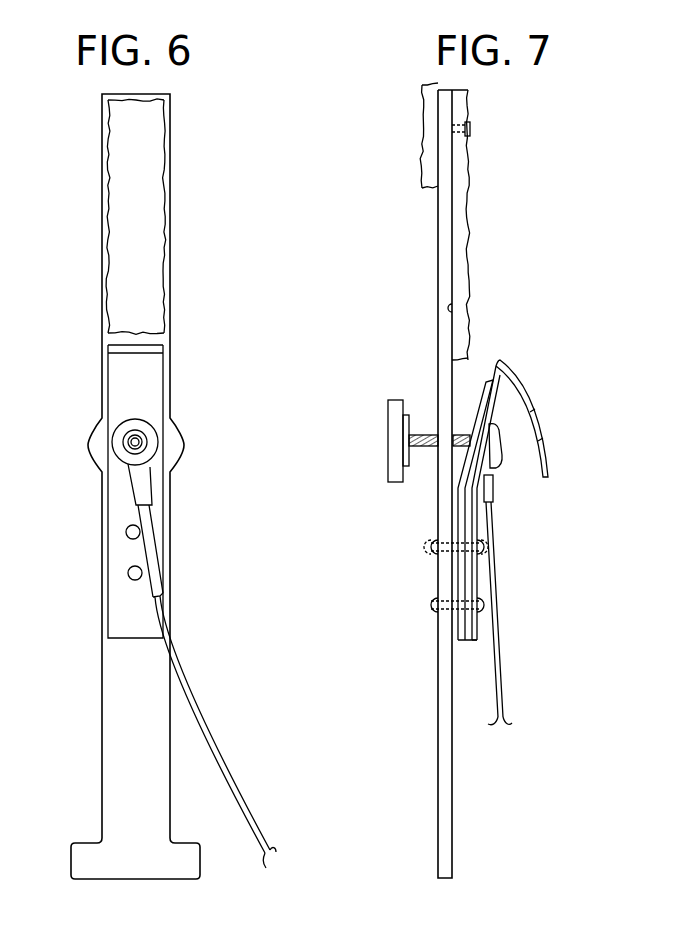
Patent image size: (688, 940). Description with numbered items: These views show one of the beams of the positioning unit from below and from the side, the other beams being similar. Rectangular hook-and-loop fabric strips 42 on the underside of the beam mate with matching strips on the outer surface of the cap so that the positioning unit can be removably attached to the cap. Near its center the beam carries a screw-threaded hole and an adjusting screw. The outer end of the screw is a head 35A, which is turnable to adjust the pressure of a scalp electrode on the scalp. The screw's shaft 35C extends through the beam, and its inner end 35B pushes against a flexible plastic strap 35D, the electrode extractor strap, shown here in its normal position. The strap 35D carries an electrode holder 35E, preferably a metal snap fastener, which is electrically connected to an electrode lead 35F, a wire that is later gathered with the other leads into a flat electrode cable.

In FIG. 7, the hook-and-loop fabric strips 42 is at (432, 174).
In FIG. 7, the head 35A is at (388, 450).
In FIG. 7, the inner end 35B is at (465, 428).
In FIG. 7, the shaft 35C is at (432, 433).
In FIG. 6, the plastic strap 35D is at (118, 617).
In FIG. 7, the plastic strap 35D is at (483, 387).
In FIG. 6, the electrode holder 35E is at (140, 430).
In FIG. 7, the electrode holder 35E is at (497, 450).
In FIG. 6, the electrode lead 35F is at (210, 770).